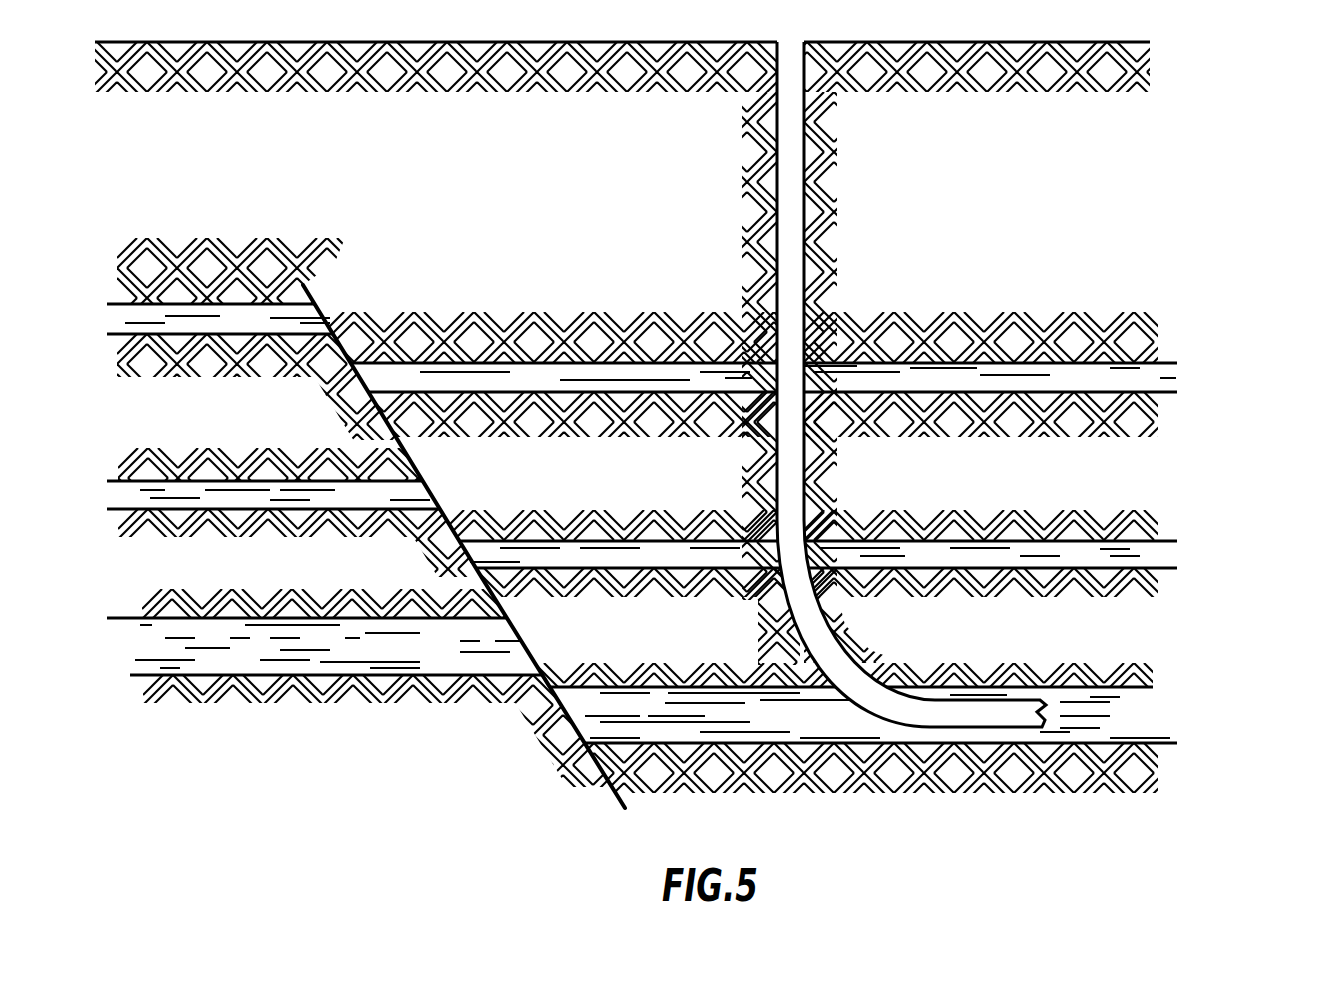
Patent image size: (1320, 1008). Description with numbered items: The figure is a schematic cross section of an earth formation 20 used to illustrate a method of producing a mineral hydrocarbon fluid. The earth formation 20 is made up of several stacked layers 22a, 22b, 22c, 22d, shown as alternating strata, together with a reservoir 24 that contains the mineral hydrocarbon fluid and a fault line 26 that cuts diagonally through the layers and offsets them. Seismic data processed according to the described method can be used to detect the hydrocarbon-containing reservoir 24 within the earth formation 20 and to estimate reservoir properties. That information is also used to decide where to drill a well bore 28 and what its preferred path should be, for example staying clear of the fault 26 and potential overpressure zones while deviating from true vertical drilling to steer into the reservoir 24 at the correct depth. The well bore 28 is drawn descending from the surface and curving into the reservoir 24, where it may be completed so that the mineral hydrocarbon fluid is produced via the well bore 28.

The earth formation 20 is at (1026, 157).
The layer 22a is at (1160, 379).
The layer 22b is at (1122, 468).
The layer 22c is at (1155, 558).
The layer 22d is at (1135, 635).
The reservoir 24 is at (1142, 718).
The fault line 26 is at (340, 315).
The well bore 28 is at (777, 128).